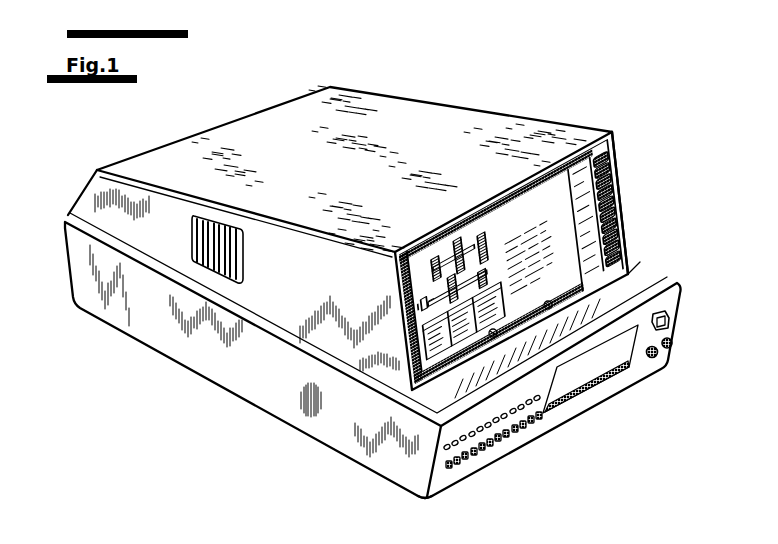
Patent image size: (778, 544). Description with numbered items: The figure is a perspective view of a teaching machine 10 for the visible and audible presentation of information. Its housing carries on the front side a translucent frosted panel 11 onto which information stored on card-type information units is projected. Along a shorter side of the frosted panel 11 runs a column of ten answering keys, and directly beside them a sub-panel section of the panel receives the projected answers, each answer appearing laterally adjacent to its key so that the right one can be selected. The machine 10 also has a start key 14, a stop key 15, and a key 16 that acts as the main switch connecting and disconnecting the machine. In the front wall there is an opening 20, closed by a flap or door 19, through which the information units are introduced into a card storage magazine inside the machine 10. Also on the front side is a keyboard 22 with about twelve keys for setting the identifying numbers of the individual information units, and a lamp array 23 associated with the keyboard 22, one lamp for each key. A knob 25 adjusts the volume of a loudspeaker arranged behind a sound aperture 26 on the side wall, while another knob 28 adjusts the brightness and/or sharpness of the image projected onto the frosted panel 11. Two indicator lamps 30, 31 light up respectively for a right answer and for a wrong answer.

The teaching machine 10 is at (246, 386).
The translucent frosted panel 11 is at (348, 238).
The start key 14 is at (618, 152).
The stop key 15 is at (640, 260).
The main switch key 16 is at (670, 321).
The flap or door 19 is at (603, 370).
The opening 20 is at (560, 416).
The keyboard 22 is at (481, 455).
The lamp array 23 is at (421, 479).
The knob 25 is at (674, 349).
The sound aperture 26 is at (245, 280).
The knob 28 is at (655, 362).
The indicator lamp 30 is at (551, 308).
The indicator lamp 31 is at (497, 335).